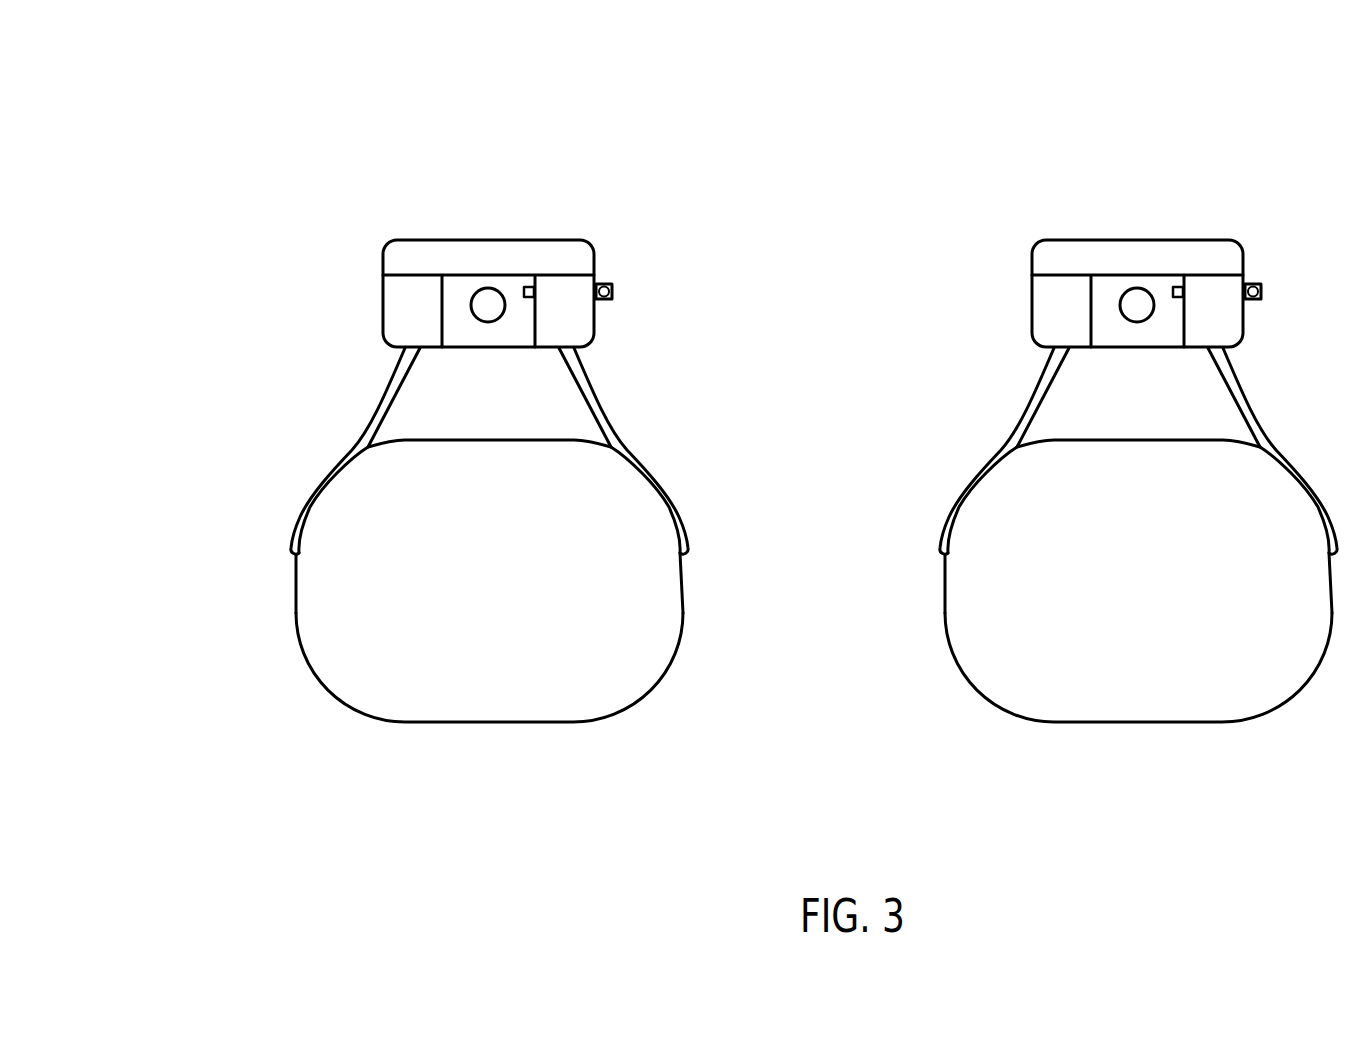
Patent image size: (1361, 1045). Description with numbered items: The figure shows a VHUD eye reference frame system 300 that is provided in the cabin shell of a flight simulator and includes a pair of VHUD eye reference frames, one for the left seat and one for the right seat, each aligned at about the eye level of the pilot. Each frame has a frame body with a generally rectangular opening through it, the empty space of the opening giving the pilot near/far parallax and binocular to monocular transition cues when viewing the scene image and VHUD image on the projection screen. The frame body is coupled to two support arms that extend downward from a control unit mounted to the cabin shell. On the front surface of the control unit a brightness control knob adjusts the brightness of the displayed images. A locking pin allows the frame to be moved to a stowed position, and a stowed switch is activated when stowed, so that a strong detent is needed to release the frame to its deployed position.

The VHUD eye reference frame system 300 is at (276, 84).